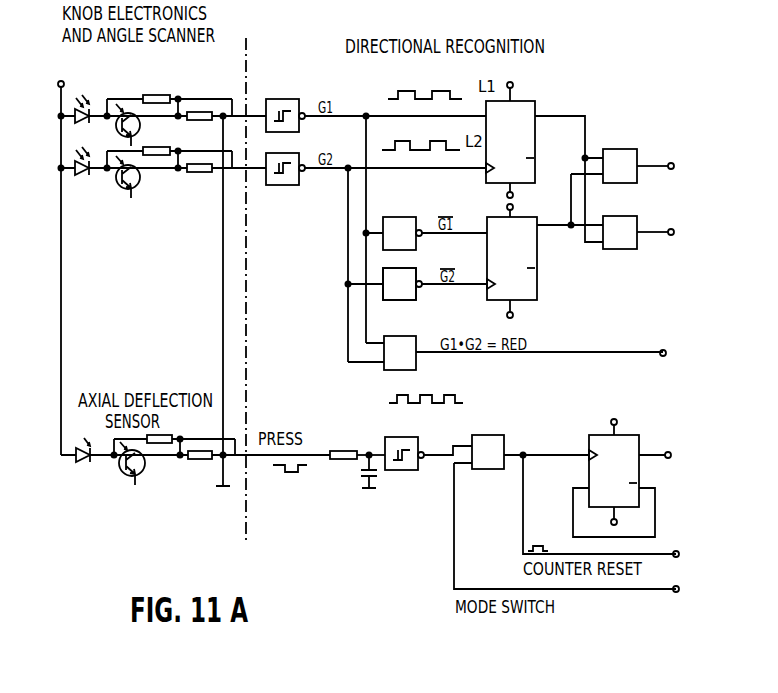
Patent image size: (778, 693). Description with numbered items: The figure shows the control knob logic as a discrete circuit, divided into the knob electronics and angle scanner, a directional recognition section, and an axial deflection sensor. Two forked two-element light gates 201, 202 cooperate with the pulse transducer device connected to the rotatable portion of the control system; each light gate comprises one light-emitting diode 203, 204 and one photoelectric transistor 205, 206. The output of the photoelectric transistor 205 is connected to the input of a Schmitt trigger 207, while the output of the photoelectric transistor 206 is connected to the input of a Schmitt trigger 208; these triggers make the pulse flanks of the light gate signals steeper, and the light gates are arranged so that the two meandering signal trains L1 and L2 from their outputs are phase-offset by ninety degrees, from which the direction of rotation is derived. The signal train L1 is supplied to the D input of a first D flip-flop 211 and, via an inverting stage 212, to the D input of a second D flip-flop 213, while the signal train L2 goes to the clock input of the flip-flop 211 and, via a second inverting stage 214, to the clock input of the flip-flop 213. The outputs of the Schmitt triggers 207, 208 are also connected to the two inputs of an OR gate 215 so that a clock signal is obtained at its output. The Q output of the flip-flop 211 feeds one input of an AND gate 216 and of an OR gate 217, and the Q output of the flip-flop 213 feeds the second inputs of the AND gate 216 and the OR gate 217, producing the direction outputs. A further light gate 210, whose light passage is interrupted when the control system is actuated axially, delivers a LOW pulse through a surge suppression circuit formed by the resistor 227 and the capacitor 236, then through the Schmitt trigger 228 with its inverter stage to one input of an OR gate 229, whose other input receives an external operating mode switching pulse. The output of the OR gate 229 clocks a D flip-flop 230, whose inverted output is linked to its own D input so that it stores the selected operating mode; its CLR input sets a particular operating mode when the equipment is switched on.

The light gate 201 is at (140, 87).
The light gate 202 is at (158, 265).
The light-emitting diode 203 is at (87, 101).
The light-emitting diode 204 is at (87, 150).
The photoelectric transistor 205 is at (142, 122).
The photoelectric transistor 206 is at (144, 178).
The Schmitt trigger 207 is at (291, 99).
The Schmitt trigger 208 is at (283, 186).
The light gate 210 is at (119, 467).
The D flip-flop 211 is at (544, 160).
The inverting stage 212 is at (408, 223).
The D flip-flop 213 is at (545, 246).
The inverting stage 214 is at (408, 296).
The OR gate 215 is at (417, 361).
The AND gate 216 is at (631, 151).
The OR gate 217 is at (620, 249).
The resistor 227 is at (341, 450).
The Schmitt trigger 228 is at (397, 471).
The OR gate 229 is at (489, 470).
The D flip-flop 230 is at (604, 471).
The capacitor 236 is at (363, 474).